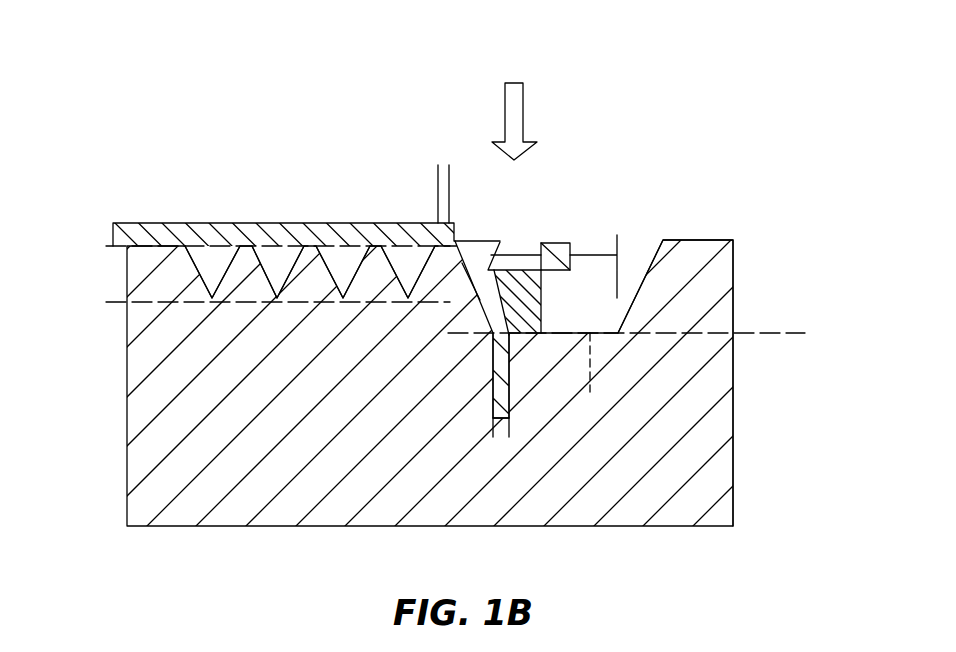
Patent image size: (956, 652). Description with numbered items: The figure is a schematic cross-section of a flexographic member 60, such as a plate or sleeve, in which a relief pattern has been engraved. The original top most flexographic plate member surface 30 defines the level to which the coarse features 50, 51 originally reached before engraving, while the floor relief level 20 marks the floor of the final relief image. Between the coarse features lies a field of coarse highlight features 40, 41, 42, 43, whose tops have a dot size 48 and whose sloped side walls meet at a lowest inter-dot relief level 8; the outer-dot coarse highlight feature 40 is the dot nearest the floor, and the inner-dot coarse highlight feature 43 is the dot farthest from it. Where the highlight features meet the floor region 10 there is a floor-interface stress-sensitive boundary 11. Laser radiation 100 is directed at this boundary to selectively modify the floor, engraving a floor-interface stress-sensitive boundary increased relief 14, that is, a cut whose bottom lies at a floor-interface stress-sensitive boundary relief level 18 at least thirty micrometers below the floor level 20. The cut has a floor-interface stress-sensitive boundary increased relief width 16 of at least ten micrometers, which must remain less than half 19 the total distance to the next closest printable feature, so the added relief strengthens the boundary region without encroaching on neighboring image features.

The lowest inter-dot relief level 8 is at (269, 301).
The floor region 10 is at (560, 246).
The floor-interface stress-sensitive boundary 11 is at (487, 280).
The floor-interface stress-sensitive boundary increased relief 14 is at (522, 320).
The floor-interface stress-sensitive boundary increased relief width 16 is at (498, 438).
The floor-interface stress-sensitive boundary relief level 18 is at (510, 418).
The half the total distance to the next closest printable feature 19 is at (586, 373).
The floor relief level 20 is at (646, 334).
The top most flexographic plate member surface 30 is at (264, 247).
The outer-dot coarse highlight feature 40 is at (433, 240).
The coarse highlight feature 41 is at (366, 240).
The coarse highlight feature 42 is at (300, 240).
The inner-dot coarse highlight feature 43 is at (231, 240).
The dot size 48 is at (440, 165).
The coarse feature 50 is at (150, 240).
The coarse feature 51 is at (697, 235).
The flexographic member 60 is at (118, 440).
The laser radiation 100 is at (507, 82).